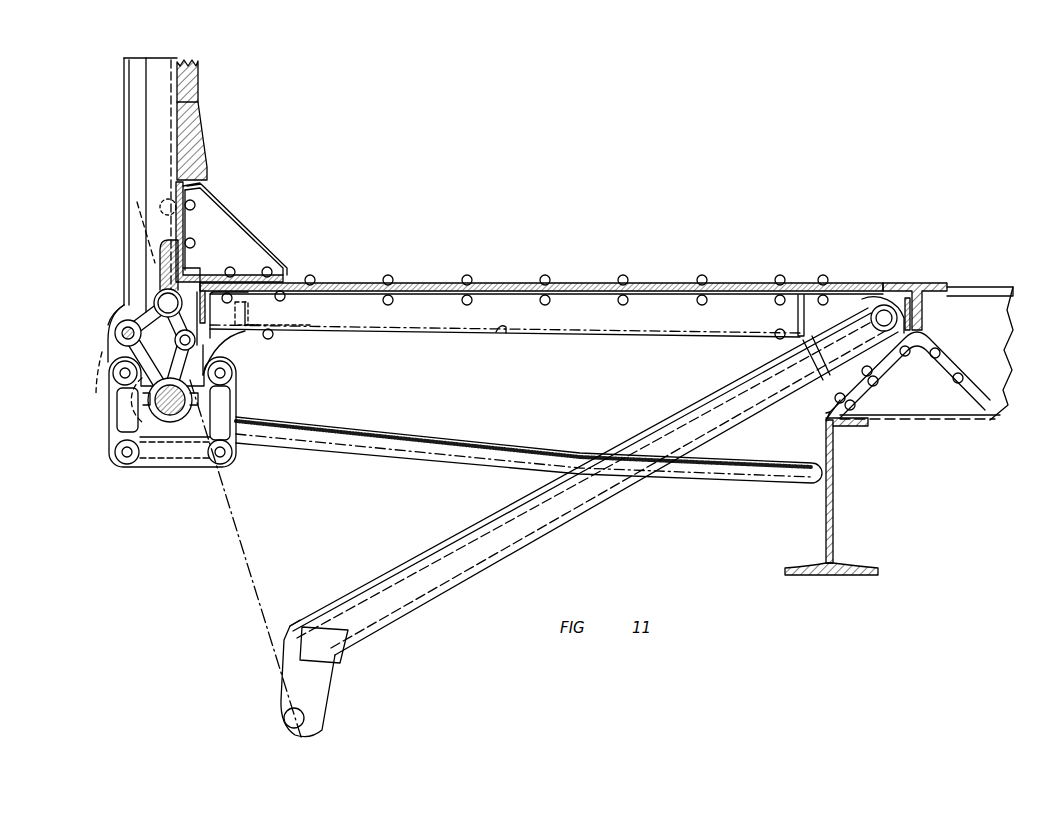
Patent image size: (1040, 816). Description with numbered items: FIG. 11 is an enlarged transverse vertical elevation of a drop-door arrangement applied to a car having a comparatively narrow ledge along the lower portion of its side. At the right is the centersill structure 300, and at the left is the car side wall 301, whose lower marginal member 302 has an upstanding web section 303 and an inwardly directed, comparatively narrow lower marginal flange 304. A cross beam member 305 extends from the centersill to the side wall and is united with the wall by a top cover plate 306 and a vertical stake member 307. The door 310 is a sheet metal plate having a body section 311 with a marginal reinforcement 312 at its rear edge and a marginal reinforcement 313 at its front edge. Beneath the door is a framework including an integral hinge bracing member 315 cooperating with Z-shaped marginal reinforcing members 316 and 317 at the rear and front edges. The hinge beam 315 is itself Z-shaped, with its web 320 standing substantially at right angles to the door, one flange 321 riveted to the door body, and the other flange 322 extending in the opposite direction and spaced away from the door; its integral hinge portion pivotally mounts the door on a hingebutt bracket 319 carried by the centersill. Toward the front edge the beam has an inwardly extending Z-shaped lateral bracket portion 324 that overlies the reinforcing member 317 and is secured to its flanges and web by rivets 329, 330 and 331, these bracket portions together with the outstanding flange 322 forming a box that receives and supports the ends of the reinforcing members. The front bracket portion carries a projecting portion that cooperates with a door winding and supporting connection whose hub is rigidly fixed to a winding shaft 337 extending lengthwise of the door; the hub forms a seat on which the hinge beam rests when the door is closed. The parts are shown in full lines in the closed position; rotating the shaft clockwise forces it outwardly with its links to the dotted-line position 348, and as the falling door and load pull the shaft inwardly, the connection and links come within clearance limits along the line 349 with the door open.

The centersill structure 300 is at (847, 416).
The car side wall 301 is at (200, 142).
The lower marginal member 302 is at (181, 230).
The upstanding web section 303 is at (190, 199).
The lower marginal flange 304 is at (199, 277).
The cross beam member 305 is at (505, 362).
The top cover plate 306 is at (646, 284).
The vertical stake member 307 is at (127, 183).
The door 310 is at (588, 297).
The body section 311 is at (563, 298).
The rear marginal reinforcement 312 is at (903, 288).
The front marginal reinforcement 313 is at (156, 297).
The hinge bracing member 315 is at (422, 322).
The rear marginal reinforcing member 316 is at (768, 288).
The front marginal reinforcing member 317 is at (257, 302).
The hingebutt bracket 319 is at (873, 337).
The web 320 is at (655, 312).
The flange 321 is at (492, 292).
The flange 322 is at (496, 346).
The front lateral bracket portion 324 is at (244, 348).
The rivet 329 is at (280, 262).
The rivet 330 is at (270, 338).
The rivet 331 is at (252, 300).
The winding shaft 337 is at (170, 412).
The dotted-line released position 348 is at (108, 403).
The open-position line 349 is at (240, 529).